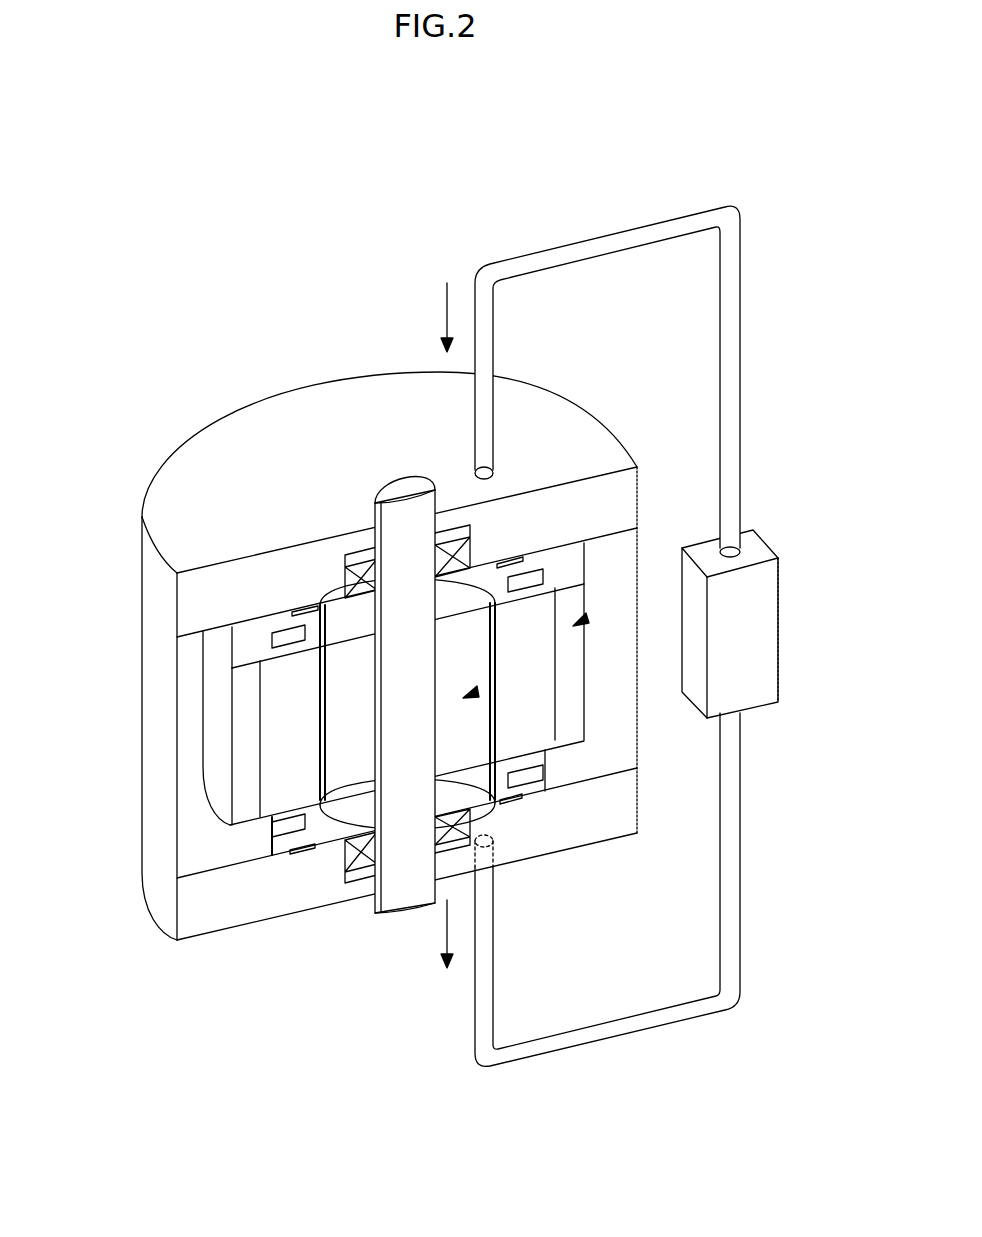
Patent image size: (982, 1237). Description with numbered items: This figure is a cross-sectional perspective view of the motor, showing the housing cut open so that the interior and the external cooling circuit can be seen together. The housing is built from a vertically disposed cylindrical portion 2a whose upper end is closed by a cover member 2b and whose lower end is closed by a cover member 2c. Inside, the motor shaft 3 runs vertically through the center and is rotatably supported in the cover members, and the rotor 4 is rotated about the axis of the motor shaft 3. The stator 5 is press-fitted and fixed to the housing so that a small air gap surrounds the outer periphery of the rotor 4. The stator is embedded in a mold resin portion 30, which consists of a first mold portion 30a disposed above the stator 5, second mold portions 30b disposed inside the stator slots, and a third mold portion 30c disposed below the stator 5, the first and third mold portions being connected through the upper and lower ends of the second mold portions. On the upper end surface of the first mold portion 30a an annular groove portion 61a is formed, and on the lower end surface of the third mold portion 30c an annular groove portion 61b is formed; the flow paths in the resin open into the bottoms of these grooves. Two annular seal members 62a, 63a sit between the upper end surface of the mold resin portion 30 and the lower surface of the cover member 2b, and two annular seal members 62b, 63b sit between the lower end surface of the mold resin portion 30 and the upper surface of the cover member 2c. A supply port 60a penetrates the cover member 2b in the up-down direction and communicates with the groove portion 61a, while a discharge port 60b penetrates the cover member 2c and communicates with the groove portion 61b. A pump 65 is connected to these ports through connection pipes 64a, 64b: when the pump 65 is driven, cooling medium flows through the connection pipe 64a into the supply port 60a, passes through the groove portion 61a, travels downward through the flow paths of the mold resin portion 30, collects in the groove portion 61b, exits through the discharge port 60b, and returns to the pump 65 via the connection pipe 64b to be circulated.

The cylindrical portion 2a is at (622, 752).
The cover member 2b is at (625, 500).
The cover member 2c is at (622, 812).
The motor shaft 3 is at (392, 848).
The rotor 4 is at (472, 692).
The stator 5 is at (582, 620).
The mold resin portion 30 is at (78, 643).
The first mold portion 30a is at (240, 651).
The second mold portion 30b is at (283, 748).
The third mold portion 30c is at (277, 851).
The supply port 60a is at (488, 468).
The discharge port 60b is at (497, 845).
The annular groove portion 61a is at (512, 556).
The annular groove portion 61b is at (513, 803).
The annular seal member 62a is at (320, 605).
The annular seal member 62b is at (318, 850).
The annular seal member 63a is at (292, 608).
The annular seal member 63b is at (292, 854).
The connection pipe 64a is at (615, 229).
The connection pipe 64b is at (608, 1049).
The pump 65 is at (750, 643).